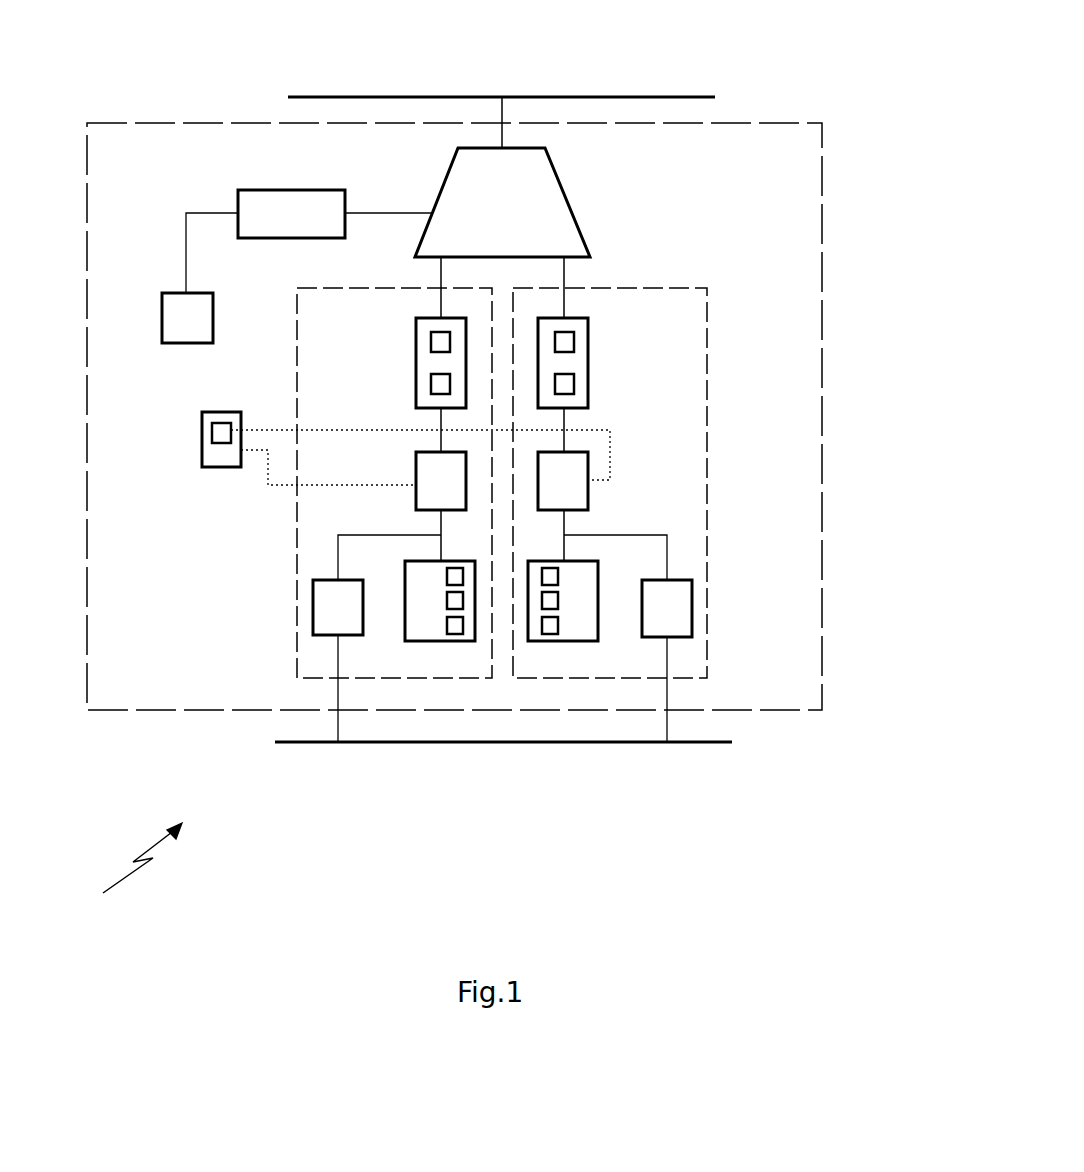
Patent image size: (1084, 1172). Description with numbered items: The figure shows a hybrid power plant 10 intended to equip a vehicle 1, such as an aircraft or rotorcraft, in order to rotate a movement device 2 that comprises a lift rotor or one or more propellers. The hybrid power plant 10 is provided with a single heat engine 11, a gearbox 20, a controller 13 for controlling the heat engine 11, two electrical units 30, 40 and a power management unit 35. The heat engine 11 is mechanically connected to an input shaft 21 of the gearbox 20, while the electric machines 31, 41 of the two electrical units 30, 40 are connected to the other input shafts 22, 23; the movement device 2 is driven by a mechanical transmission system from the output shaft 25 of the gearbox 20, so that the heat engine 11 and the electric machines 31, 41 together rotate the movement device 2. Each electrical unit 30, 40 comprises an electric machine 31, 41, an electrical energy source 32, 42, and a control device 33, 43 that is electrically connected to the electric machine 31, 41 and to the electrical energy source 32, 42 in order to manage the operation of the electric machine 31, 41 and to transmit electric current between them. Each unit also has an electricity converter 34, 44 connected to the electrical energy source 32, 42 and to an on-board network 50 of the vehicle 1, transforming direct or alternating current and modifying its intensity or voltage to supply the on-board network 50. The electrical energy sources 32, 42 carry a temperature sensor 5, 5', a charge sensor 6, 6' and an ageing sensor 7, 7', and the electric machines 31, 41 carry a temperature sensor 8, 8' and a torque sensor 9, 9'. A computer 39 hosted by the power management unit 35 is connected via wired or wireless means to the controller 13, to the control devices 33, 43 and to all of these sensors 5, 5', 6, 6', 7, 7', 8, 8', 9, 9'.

The vehicle 1 is at (133, 868).
The movement device 2 is at (630, 97).
The hybrid power plant 10 is at (822, 652).
The heat engine 11 is at (290, 190).
The controller 13 is at (162, 320).
The gearbox 20 is at (565, 200).
The input shaft 21 is at (385, 213).
The input shaft 22 is at (440, 275).
The input shaft 23 is at (565, 275).
The output shaft 25 is at (502, 135).
The electrical unit 30 is at (297, 540).
The electric machine 31 is at (392, 350).
The electrical energy source 32 is at (429, 700).
The control device 33 is at (416, 498).
The electricity converter 34 is at (313, 607).
The power management unit 35 is at (370, 441).
The computer 39 is at (202, 435).
The electrical unit 40 is at (707, 470).
The electric machine 41 is at (617, 350).
The electrical energy source 42 is at (578, 700).
The control device 43 is at (588, 498).
The electricity converter 44 is at (692, 595).
The on-board network 50 is at (733, 742).
The temperature sensor 5 is at (469, 717).
The charge sensor 6 is at (449, 698).
The ageing sensor 7 is at (437, 704).
The temperature sensor 5' is at (535, 717).
The charge sensor 6' is at (559, 698).
The ageing sensor 7' is at (573, 704).
The temperature sensor 8 is at (390, 376).
The torque sensor 9 is at (396, 322).
The temperature sensor 8' is at (620, 376).
The torque sensor 9' is at (615, 322).